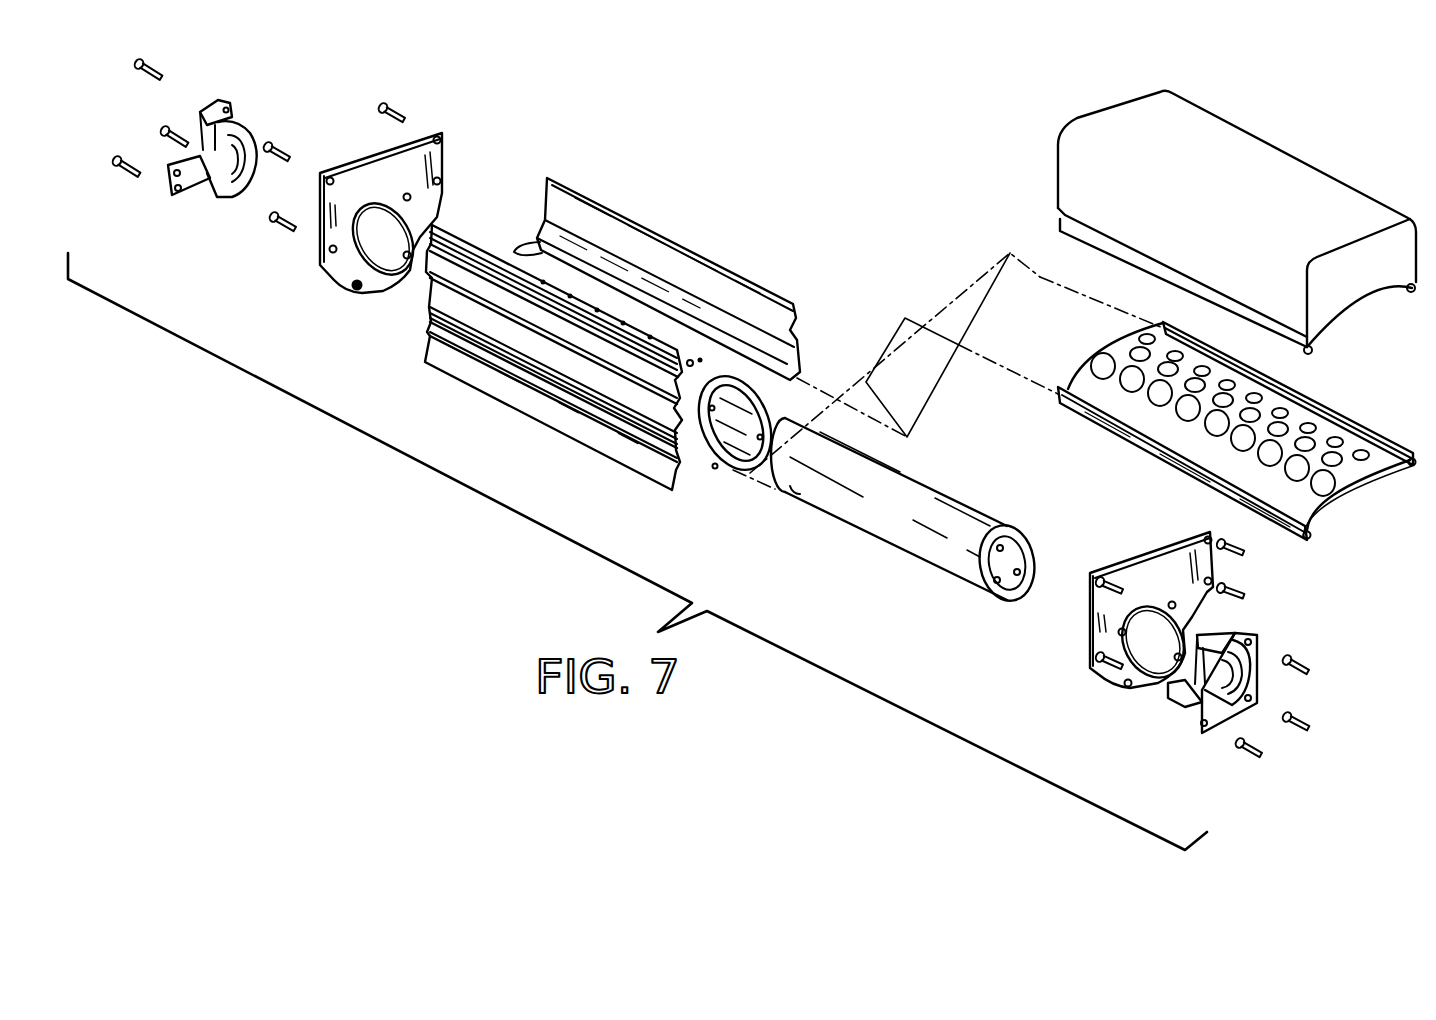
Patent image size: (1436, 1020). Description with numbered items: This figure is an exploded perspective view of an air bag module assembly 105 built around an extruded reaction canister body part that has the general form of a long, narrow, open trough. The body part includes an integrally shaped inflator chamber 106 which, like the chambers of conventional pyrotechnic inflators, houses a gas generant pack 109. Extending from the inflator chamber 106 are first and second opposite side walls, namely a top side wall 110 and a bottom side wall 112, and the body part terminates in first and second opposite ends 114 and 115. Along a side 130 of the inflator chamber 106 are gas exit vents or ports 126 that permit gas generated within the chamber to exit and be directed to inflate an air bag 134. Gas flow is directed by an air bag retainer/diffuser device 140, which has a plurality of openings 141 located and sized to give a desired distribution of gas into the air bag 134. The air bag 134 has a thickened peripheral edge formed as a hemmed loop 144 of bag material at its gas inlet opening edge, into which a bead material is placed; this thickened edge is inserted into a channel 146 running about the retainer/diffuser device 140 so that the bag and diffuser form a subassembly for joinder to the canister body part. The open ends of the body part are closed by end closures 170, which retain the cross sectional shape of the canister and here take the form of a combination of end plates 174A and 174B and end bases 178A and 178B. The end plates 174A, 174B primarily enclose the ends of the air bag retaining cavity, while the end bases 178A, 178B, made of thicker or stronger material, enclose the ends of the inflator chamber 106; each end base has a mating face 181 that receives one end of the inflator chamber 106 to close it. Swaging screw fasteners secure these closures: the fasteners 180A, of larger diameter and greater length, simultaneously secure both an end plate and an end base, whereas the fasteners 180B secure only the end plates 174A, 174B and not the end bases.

The air bag module assembly 105 is at (797, 210).
The inflator chamber 106 is at (780, 373).
The gas generant pack 109 is at (912, 532).
The top side wall 110 is at (582, 207).
The bottom side wall 112 is at (550, 356).
The first end 114 is at (705, 464).
The second end 115 is at (420, 345).
The gas exit vents 126 is at (691, 359).
The side of inflator chamber 130 is at (523, 256).
The air bag 134 is at (1303, 180).
The air bag retainer/diffuser device 140 is at (1350, 427).
The openings 141 is at (1327, 482).
The hemmed loop 144 is at (1410, 293).
The channel 146 is at (1137, 450).
The end closures 170 is at (254, 268).
The end plate 174A is at (425, 142).
The end plate 174B is at (1150, 570).
The end base 178A is at (168, 192).
The end base 178B is at (1192, 723).
The fasteners 180A is at (125, 160).
The fasteners 180B is at (378, 110).
The mating face 181 is at (226, 188).